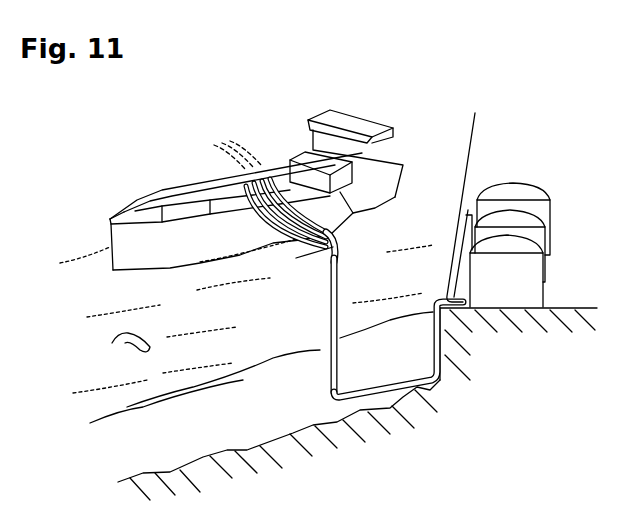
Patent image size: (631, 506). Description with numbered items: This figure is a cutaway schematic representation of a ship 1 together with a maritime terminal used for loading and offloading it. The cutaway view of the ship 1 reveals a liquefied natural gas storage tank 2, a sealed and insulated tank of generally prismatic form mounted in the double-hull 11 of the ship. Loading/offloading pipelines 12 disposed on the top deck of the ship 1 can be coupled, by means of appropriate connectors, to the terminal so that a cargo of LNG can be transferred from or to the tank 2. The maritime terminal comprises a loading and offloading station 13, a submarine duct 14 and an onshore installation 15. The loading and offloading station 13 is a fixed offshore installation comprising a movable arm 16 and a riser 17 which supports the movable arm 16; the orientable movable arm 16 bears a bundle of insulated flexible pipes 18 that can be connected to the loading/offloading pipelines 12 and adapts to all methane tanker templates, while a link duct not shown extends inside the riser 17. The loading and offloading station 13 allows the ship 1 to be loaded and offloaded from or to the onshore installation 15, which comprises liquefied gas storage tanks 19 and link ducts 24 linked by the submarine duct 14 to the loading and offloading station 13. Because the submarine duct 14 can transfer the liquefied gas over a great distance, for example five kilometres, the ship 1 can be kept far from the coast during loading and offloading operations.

The ship 1 is at (253, 190).
The liquefied natural gas storage tank 2 is at (298, 169).
The double-hull 11 is at (333, 192).
The loading/offloading pipelines 12 is at (215, 146).
The loading and offloading station 13 is at (355, 314).
The submarine duct 14 is at (330, 326).
The onshore installation 15 is at (528, 220).
The movable arm 16 is at (340, 267).
The riser 17 is at (325, 368).
The bundle of insulated flexible pipes 18 is at (294, 250).
The liquefied gas storage tanks 19 is at (489, 184).
The link ducts 24 is at (456, 245).